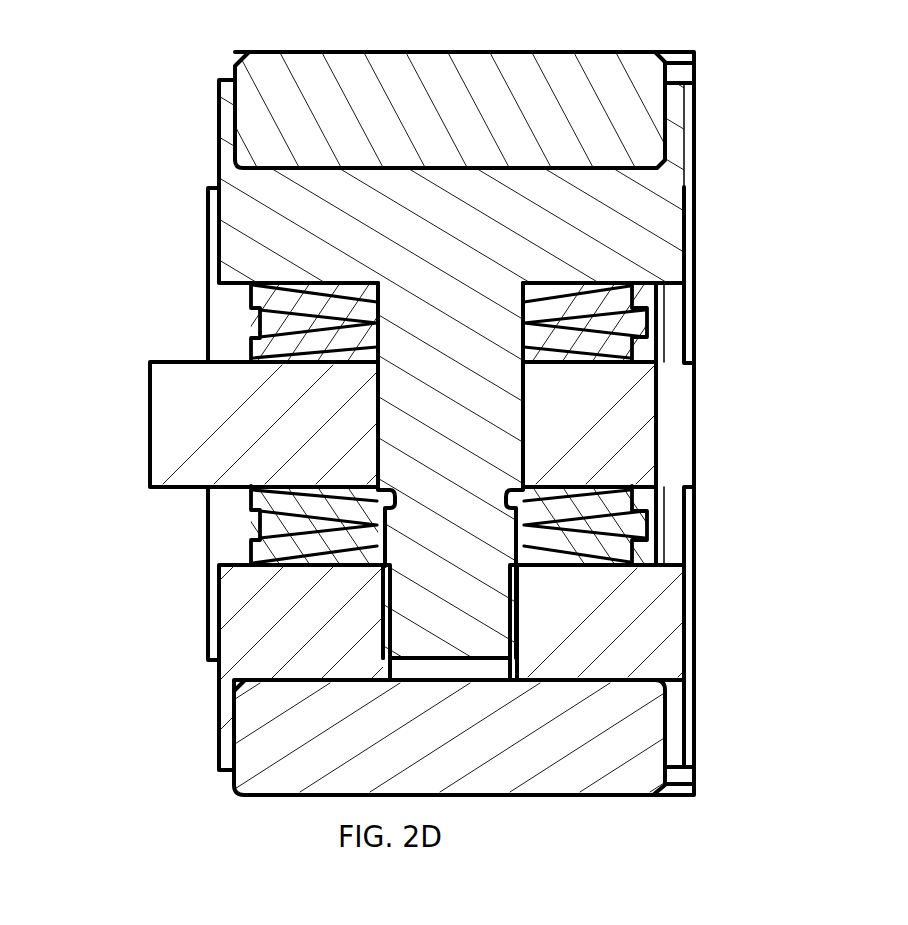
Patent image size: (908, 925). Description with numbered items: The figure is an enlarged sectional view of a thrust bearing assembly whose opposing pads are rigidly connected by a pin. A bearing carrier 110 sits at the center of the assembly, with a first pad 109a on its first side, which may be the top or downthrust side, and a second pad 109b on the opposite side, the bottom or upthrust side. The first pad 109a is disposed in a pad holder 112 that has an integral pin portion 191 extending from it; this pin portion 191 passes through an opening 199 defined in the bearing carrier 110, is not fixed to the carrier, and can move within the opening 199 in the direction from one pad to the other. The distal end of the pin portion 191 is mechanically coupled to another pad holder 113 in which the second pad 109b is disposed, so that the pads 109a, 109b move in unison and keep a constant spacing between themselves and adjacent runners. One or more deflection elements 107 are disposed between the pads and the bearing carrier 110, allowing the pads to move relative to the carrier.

The first pad 109a is at (271, 76).
The second pad 109b is at (595, 772).
The pad holder 112 is at (252, 212).
The deflection elements 107 is at (630, 295).
The opening 199 is at (522, 387).
The bearing carrier 110 is at (160, 402).
The pin portion 191 is at (422, 440).
The pad holder 113 is at (650, 615).